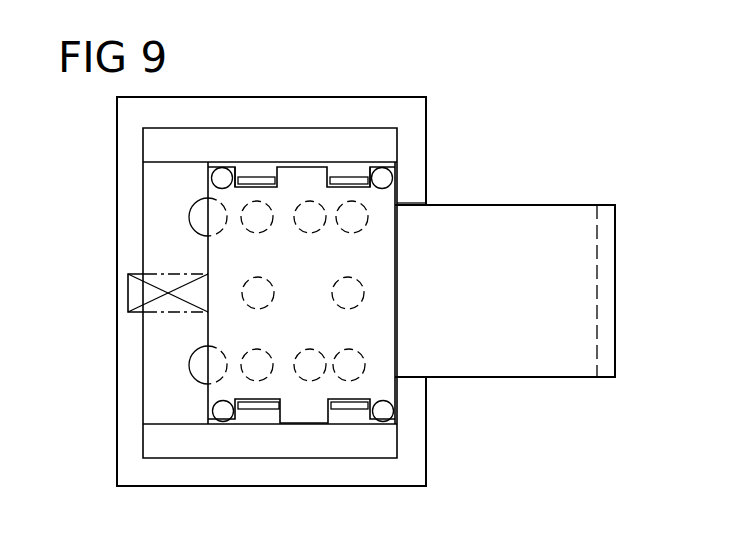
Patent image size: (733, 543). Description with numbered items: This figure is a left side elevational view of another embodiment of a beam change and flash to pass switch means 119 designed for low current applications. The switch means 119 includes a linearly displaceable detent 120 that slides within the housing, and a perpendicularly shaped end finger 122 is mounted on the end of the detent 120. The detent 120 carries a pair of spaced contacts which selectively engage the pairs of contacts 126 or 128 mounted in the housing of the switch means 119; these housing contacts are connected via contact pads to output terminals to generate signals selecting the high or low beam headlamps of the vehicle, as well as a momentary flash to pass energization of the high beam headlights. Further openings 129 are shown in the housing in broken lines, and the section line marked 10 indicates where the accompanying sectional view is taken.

The switch means 119 is at (242, 97).
The linearly displaceable detent 120 is at (528, 228).
The perpendicularly shaped end finger 122 is at (600, 205).
The pair of contacts 126 is at (189, 214).
The pair of contacts 128 is at (362, 214).
The dashed openings 129 is at (257, 200).
The section line 10- 10 is at (112, 293).